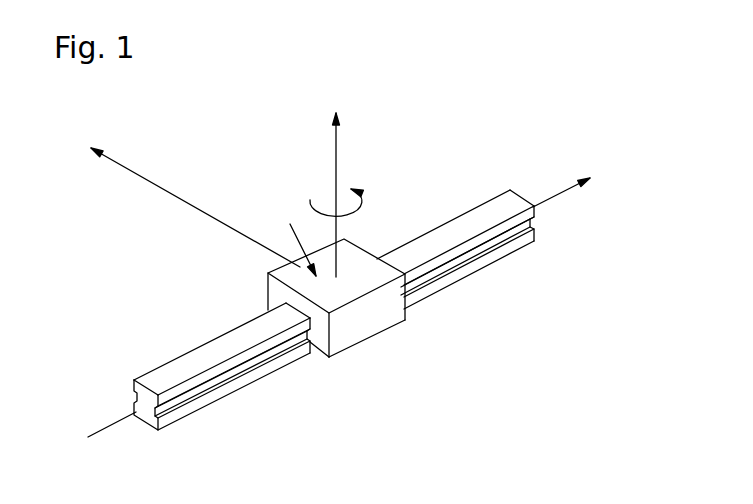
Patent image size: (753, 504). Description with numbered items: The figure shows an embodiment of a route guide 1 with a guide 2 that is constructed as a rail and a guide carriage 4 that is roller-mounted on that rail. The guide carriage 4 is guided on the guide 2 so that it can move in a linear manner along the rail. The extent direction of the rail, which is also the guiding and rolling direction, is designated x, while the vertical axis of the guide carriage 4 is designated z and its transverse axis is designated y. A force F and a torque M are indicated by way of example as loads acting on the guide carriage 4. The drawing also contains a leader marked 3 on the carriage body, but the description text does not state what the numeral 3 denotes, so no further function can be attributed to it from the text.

The route guide 1 is at (364, 265).
The guide 2 is at (468, 215).
The guide carriage 3 is at (392, 332).
The guide carriage 4 is at (352, 337).